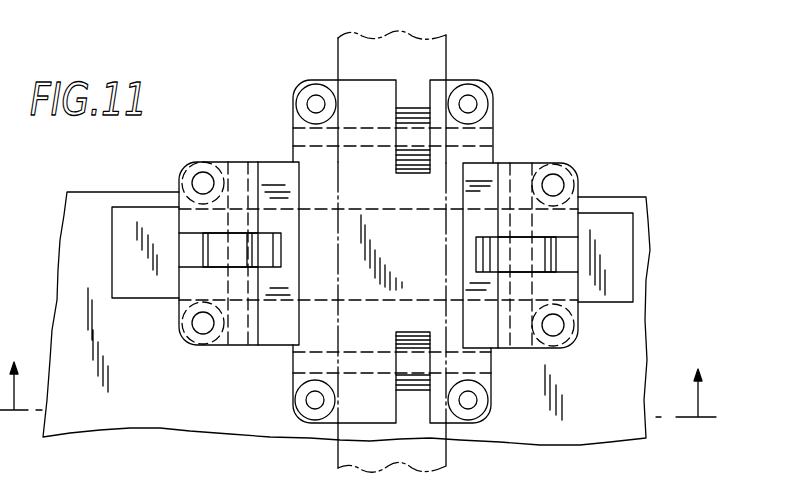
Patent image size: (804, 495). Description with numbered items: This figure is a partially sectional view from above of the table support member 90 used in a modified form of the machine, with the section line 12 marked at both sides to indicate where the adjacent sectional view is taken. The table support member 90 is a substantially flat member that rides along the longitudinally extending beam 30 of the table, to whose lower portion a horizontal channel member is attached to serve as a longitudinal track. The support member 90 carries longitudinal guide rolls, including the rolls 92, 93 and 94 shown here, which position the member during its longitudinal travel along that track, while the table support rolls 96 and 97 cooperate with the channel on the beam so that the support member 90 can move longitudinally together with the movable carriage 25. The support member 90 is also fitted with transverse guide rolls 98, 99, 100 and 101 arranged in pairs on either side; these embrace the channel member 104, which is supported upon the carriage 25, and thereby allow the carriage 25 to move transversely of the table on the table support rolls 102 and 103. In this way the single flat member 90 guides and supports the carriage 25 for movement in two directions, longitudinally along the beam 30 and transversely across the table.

The section line 12 is at (359, 375).
The movable carriage 25 is at (649, 317).
The beam 30 is at (448, 456).
The table support member 90 is at (488, 82).
The longitudinal guide roll 92 is at (486, 108).
The longitudinal guide roll 93 is at (488, 403).
The longitudinal guide roll 94 is at (294, 403).
The table support roll 96 is at (411, 108).
The table support roll 97 is at (410, 332).
The transverse guide roll 98 is at (217, 140).
The transverse guide roll 99 is at (584, 164).
The transverse guide roll 100 is at (558, 344).
The transverse guide roll 101 is at (200, 349).
The table support roll 102 is at (553, 258).
The table support roll 103 is at (201, 251).
The channel member 104 is at (624, 262).